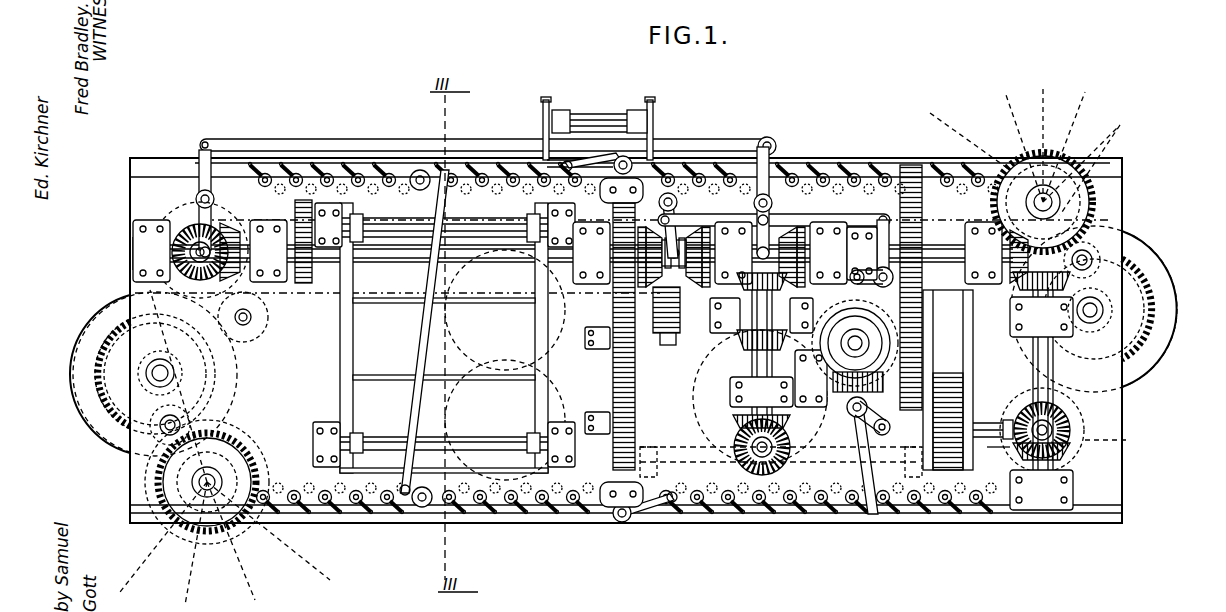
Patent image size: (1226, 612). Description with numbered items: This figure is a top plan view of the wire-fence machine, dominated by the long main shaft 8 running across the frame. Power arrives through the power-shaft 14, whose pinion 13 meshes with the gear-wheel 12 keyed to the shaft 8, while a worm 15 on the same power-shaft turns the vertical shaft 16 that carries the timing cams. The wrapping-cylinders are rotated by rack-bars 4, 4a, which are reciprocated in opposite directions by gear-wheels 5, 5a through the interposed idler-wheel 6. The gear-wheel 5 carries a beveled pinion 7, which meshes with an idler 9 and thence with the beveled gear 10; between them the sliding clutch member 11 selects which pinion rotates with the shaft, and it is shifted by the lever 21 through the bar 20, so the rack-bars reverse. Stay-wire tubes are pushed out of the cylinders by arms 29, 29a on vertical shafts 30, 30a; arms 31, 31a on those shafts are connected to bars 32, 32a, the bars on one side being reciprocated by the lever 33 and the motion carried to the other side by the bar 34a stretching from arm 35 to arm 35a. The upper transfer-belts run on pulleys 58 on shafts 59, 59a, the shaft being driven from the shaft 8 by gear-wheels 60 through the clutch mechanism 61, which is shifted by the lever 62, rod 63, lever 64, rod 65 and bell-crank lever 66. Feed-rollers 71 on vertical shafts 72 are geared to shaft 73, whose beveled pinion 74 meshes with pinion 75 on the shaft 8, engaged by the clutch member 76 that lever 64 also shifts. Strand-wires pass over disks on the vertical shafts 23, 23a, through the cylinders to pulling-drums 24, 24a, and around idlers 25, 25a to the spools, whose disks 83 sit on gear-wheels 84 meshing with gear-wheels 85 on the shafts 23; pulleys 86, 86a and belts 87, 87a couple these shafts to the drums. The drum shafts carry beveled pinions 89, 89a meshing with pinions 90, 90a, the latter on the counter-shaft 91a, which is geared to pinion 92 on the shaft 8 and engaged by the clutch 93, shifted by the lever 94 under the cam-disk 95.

The rack-bar 4 is at (612, 204).
The rack-bar 4a is at (605, 490).
The gear-wheel 5 is at (605, 293).
The gear-wheel 5a is at (610, 400).
The idler-wheel 6 is at (610, 372).
The beveled pinion 7 is at (650, 284).
The shaft 8 is at (500, 258).
The idler 9 is at (686, 285).
The beveled gear 10 is at (698, 282).
The clutch member 11 is at (678, 238).
The gear-wheel 12 is at (920, 220).
The pinion 13 is at (885, 418).
The power-shaft 14 is at (812, 348).
The worm 15 is at (842, 395).
The vertical shaft 16 is at (845, 315).
The bar 20 is at (755, 206).
The lever 21 is at (662, 222).
The vertical shaft 23 is at (1052, 202).
The vertical shaft 23a is at (190, 476).
The pulling-drum 24 is at (162, 216).
The pulling-drum 24a is at (1125, 440).
The idler 25 is at (252, 317).
The idler 25a is at (1010, 335).
The arm 29 is at (258, 183).
The arm 29a is at (825, 492).
The vertical shaft 30 is at (422, 170).
The vertical shaft 30a is at (382, 495).
The arm 31 is at (295, 176).
The arm 31a is at (300, 512).
The bar 32 is at (490, 162).
The bar 32a is at (448, 512).
The lever 33 is at (868, 477).
The bar 34a is at (420, 350).
The arm 35 is at (446, 168).
The arm 35a is at (402, 503).
The pulley 58 is at (345, 210).
The shaft 59 is at (487, 226).
The shaft 59a is at (444, 442).
The gear-wheels 60 is at (300, 212).
The clutch mechanism 61 is at (197, 213).
The lever 62 is at (198, 184).
The rod 63 is at (272, 132).
The lever 64 is at (776, 148).
The rod 65 is at (866, 216).
The bell-crank lever 66 is at (880, 243).
The feed-rollers 71 is at (712, 352).
The vertical shaft 72 is at (740, 438).
The shaft 73 is at (755, 362).
The beveled pinion 74 is at (790, 285).
The pinion 75 is at (815, 218).
The clutch member 76 is at (752, 236).
The disk 83 is at (86, 340).
The gear-wheel 84 is at (100, 400).
The gear-wheel 85 is at (180, 528).
The pulley 86 is at (210, 535).
The pulley 86a is at (1050, 160).
The belt 87 is at (180, 390).
The belt 87a is at (1092, 365).
The beveled pinion 89 is at (208, 280).
The beveled pinion 89a is at (1070, 430).
The beveled pinion 90 is at (232, 224).
The beveled pinion 90a is at (1068, 450).
The counter-shaft 91a is at (1056, 355).
The pinion 92 is at (1018, 240).
The clutch 93 is at (1065, 415).
The lever 94 is at (864, 425).
The cam-disk 95 is at (873, 288).